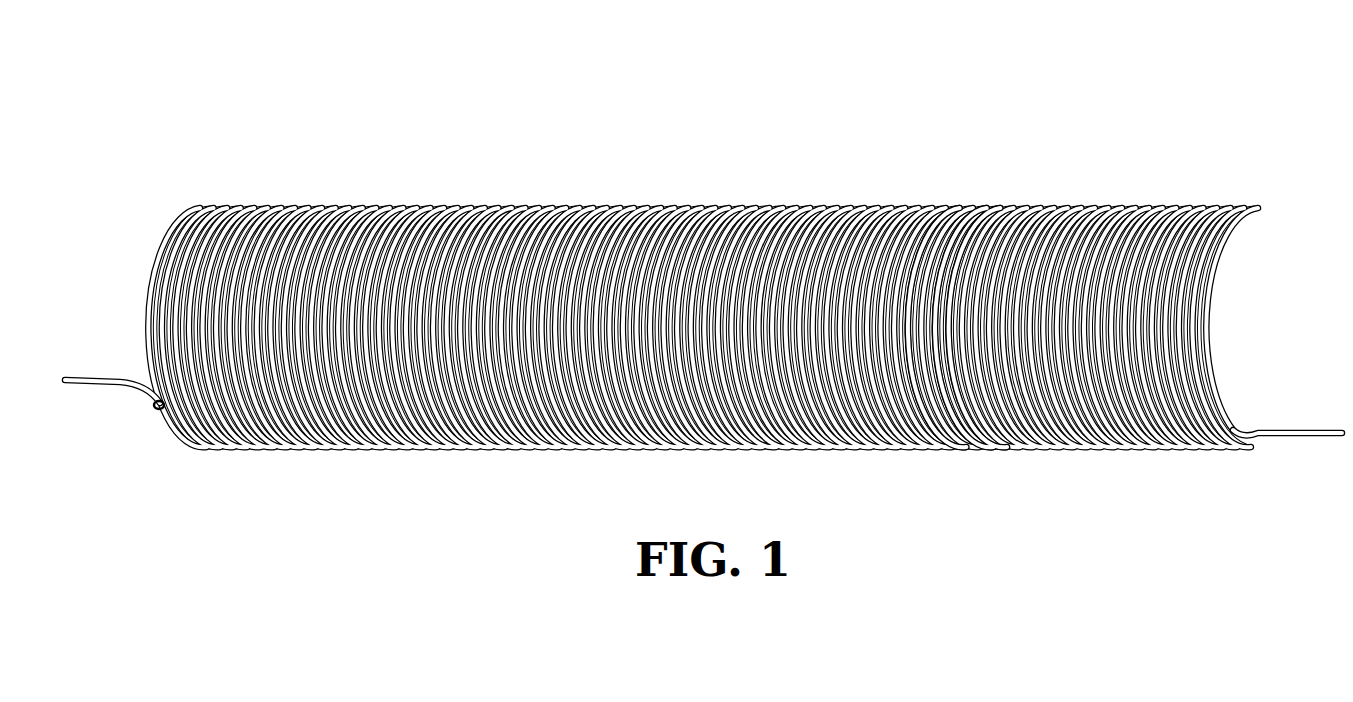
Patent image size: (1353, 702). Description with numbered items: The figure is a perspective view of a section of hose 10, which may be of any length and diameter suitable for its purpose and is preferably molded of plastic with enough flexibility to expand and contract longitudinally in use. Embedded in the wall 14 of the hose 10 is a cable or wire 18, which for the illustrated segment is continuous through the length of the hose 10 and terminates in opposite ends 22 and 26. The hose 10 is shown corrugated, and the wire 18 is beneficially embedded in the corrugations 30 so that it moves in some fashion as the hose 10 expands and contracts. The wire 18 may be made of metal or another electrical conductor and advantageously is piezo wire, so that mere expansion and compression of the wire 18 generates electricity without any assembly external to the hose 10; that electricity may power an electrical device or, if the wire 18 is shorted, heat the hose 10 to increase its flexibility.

The hose 10 is at (703, 276).
The wall 14 is at (819, 245).
The corrugations 30 is at (1007, 206).
The end 26 is at (77, 378).
The wire 18 is at (150, 408).
The end 22 is at (1285, 437).